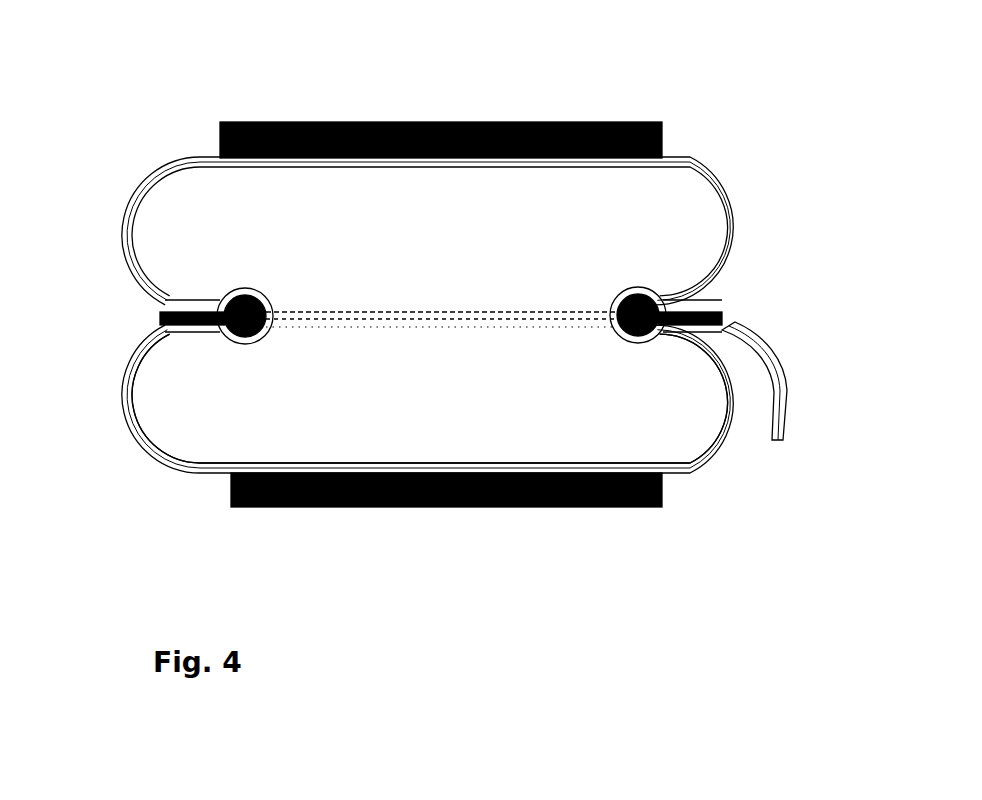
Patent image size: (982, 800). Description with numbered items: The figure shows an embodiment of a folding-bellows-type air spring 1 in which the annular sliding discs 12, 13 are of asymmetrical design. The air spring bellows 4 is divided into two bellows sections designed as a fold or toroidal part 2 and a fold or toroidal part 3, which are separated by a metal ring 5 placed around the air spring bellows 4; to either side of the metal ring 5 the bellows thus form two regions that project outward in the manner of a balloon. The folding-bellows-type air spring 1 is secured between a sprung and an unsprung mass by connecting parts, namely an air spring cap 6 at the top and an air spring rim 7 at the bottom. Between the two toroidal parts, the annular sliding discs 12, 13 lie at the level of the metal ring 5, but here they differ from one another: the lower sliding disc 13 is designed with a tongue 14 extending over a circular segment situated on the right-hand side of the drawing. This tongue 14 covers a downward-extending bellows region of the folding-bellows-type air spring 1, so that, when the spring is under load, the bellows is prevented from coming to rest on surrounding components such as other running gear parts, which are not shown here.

The folding-bellows-type air spring 1 is at (727, 78).
The fold or toroidal part 2 is at (735, 178).
The fold or toroidal part 3 is at (750, 443).
The air spring bellows 4 is at (616, 362).
The metal ring 5 is at (552, 275).
The air spring cap 6 is at (200, 123).
The air spring rim 7 is at (668, 518).
The annular sliding disc 12 is at (185, 308).
The lower sliding disc 13 is at (180, 331).
The tongue 14 is at (778, 391).